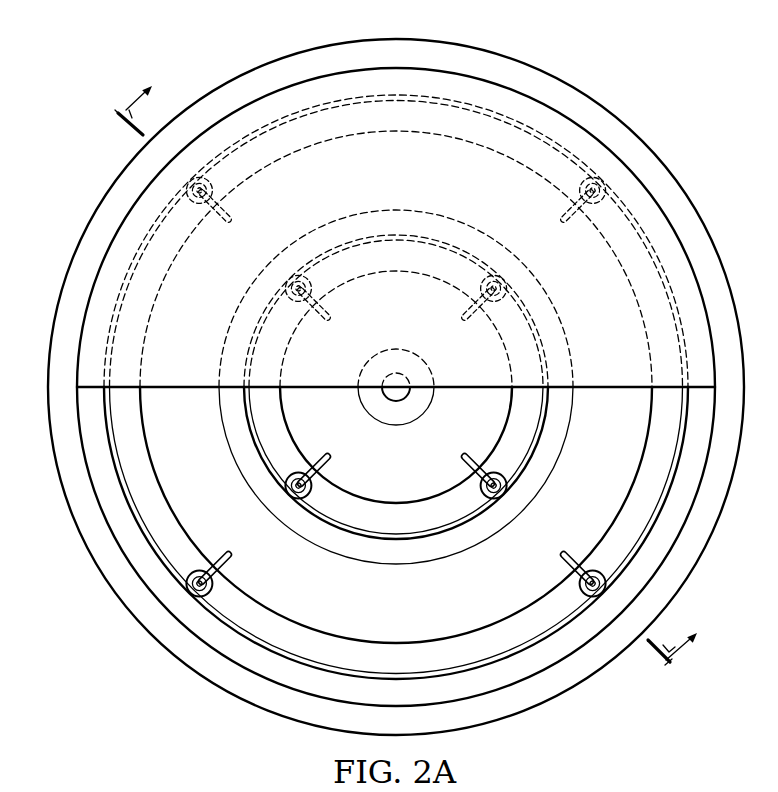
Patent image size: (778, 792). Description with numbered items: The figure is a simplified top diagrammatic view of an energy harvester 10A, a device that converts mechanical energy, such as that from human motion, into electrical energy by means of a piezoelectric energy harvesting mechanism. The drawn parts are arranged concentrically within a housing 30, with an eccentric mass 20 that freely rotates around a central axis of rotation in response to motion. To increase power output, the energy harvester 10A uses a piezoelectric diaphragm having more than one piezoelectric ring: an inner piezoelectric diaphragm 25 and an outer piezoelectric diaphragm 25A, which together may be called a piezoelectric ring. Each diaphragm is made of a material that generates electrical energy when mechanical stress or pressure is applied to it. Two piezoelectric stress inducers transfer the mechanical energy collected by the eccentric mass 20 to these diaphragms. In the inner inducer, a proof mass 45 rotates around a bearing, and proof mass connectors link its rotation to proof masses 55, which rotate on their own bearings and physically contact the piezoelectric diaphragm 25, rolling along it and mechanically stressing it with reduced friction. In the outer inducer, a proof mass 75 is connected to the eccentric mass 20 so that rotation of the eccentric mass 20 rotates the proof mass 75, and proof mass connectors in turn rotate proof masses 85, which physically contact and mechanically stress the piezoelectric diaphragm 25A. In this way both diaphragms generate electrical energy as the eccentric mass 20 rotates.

The energy harvester 10A is at (88, 93).
The eccentric mass 20 is at (480, 78).
The housing 30 is at (568, 82).
The piezoelectric diaphragm 25 is at (349, 533).
The piezoelectric diaphragm 25A is at (398, 680).
The proof mass 45 is at (408, 478).
The proof masses 55 is at (508, 478).
The proof mass 75 is at (408, 617).
The proof masses 85 is at (197, 571).